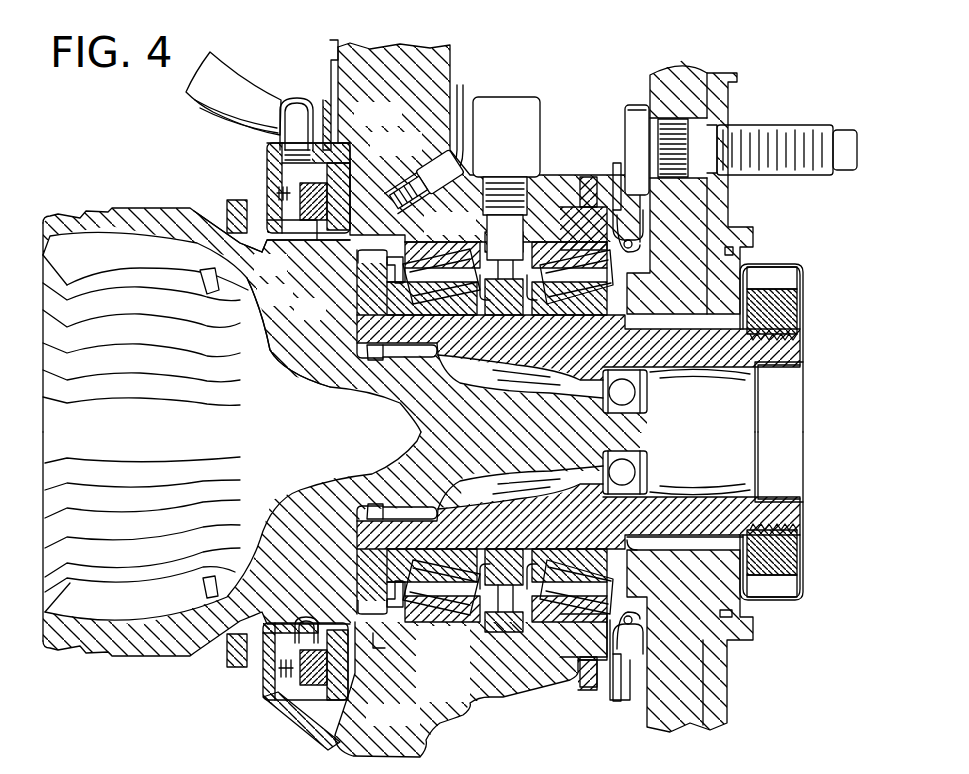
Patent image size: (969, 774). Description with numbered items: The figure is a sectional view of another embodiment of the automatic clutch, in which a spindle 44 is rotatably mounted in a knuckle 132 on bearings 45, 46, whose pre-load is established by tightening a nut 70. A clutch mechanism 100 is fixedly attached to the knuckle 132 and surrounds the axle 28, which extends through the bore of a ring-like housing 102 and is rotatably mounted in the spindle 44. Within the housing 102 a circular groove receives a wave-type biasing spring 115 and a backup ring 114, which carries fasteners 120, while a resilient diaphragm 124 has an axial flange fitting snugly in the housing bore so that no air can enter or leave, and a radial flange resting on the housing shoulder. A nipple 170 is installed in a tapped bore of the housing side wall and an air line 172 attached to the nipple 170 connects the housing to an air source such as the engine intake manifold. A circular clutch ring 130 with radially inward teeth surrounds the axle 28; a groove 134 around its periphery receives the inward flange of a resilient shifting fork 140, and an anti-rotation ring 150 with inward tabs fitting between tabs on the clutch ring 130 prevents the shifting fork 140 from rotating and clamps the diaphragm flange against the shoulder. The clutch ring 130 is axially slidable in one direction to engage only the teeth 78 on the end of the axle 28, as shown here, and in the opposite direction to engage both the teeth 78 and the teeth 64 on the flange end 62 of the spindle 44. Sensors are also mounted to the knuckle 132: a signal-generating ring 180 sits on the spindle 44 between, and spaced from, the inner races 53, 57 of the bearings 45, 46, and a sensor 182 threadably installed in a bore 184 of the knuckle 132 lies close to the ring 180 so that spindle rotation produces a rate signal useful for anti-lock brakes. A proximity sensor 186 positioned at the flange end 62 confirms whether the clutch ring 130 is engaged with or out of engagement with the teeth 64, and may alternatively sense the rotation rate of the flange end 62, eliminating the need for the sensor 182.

The axle 28 is at (127, 209).
The spindle 44 is at (807, 348).
The bearing 45 is at (632, 262).
The bearing 46 is at (360, 272).
The inner race 53 is at (405, 310).
The inner race 57 is at (647, 360).
The flange end 62 is at (360, 265).
The teeth 64 is at (336, 282).
The nut 70 is at (775, 308).
The teeth 78 is at (350, 249).
The clutch mechanism 100 is at (296, 82).
The housing 102 is at (267, 172).
The backup ring 114 is at (165, 228).
The biasing spring 115 is at (268, 194).
The fasteners 120 is at (350, 178).
The resilient diaphragm 124 is at (280, 105).
The clutch ring 130 is at (392, 233).
The knuckle 132 is at (452, 83).
The groove 134 is at (350, 647).
The shifting fork 140 is at (378, 190).
The anti-rotation ring 150 is at (355, 673).
The nipple 170 is at (262, 160).
The air line 172 is at (227, 70).
The ring 180 is at (563, 200).
The sensor 182 is at (510, 107).
The bore 184 is at (495, 185).
The proximity sensor 186 is at (468, 180).